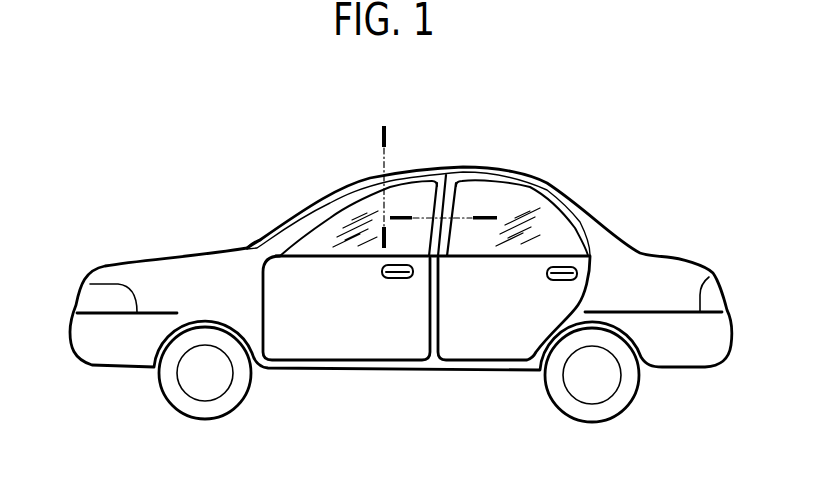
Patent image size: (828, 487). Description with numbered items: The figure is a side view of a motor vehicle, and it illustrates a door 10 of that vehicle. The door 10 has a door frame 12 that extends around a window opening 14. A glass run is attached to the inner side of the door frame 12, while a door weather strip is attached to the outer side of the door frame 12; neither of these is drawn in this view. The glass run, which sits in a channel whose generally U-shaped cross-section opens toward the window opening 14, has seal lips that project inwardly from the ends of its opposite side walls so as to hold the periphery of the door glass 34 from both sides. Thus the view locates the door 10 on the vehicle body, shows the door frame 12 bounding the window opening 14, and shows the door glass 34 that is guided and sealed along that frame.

The door 10 is at (344, 340).
The door frame 12 is at (370, 192).
The window opening 14 is at (347, 208).
The door glass 34 is at (327, 242).